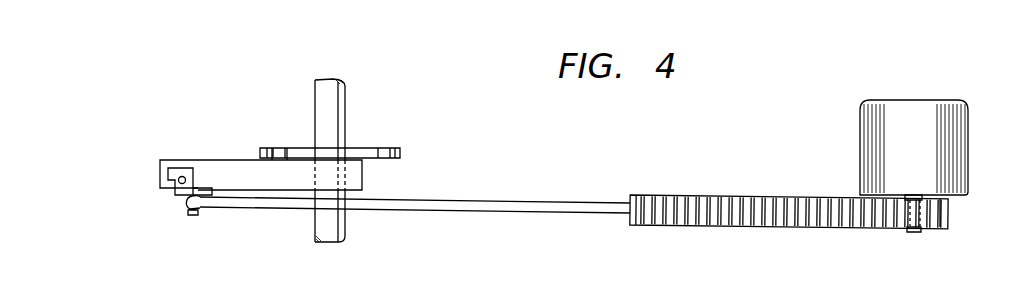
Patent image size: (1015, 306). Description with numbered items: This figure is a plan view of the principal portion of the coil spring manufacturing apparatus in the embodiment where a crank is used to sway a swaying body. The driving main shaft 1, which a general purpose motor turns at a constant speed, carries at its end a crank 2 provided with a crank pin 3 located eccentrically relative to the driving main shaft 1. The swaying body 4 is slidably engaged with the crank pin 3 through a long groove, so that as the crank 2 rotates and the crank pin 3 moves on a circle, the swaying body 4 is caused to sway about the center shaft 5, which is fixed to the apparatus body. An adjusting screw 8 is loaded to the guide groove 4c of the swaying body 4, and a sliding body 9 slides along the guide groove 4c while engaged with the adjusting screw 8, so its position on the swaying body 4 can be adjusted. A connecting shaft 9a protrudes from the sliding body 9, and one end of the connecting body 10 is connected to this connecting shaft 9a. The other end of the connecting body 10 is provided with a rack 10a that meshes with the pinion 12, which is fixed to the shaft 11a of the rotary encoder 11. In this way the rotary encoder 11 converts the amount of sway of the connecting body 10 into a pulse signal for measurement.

The driving main shaft 1 is at (322, 95).
The crank 2 is at (378, 152).
The crank pin 3 is at (280, 170).
The swaying body 4 is at (160, 173).
The guide groove 4c is at (160, 183).
The center shaft 5 is at (320, 232).
The adjusting screw 8 is at (181, 176).
The sliding body 9 is at (188, 168).
The connecting shaft 9a is at (192, 216).
The connecting body 10 is at (788, 232).
The rack 10a is at (717, 206).
The rotary encoder 11 is at (872, 137).
The shaft of rotary encoder 11a is at (913, 234).
The pinion 12 is at (950, 214).